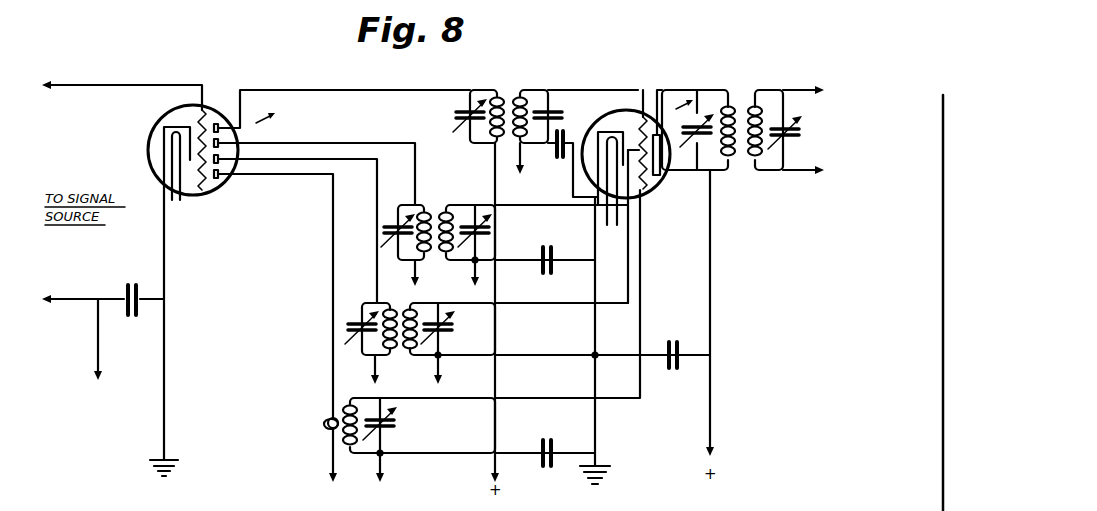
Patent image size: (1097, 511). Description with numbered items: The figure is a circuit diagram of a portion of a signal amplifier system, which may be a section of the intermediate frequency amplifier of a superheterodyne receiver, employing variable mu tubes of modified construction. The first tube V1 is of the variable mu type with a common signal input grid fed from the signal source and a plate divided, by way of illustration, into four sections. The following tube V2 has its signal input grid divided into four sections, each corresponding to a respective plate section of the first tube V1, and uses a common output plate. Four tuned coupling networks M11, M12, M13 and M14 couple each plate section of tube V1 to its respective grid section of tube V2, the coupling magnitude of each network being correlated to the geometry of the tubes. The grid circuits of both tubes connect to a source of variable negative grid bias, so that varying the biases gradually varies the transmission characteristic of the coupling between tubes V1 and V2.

The first tube V1 is at (212, 103).
The following tube V2 is at (642, 108).
The tuned coupling network M11 is at (509, 96).
The tuned coupling network M12 is at (436, 207).
The tuned coupling network M13 is at (401, 352).
The tuned coupling network M14 is at (339, 407).